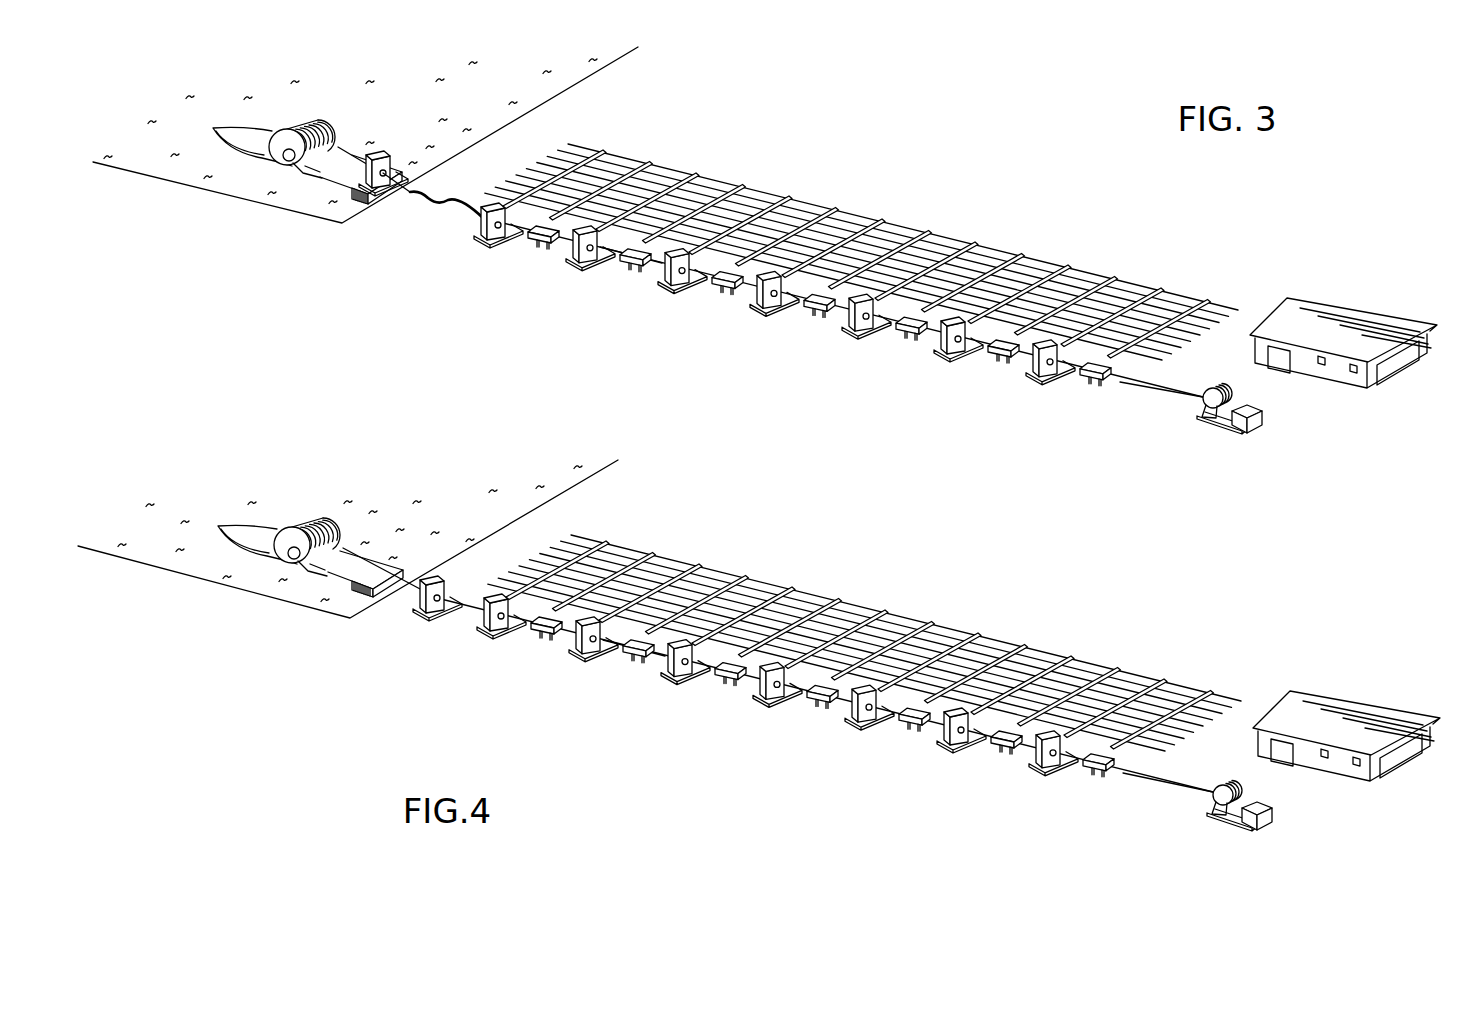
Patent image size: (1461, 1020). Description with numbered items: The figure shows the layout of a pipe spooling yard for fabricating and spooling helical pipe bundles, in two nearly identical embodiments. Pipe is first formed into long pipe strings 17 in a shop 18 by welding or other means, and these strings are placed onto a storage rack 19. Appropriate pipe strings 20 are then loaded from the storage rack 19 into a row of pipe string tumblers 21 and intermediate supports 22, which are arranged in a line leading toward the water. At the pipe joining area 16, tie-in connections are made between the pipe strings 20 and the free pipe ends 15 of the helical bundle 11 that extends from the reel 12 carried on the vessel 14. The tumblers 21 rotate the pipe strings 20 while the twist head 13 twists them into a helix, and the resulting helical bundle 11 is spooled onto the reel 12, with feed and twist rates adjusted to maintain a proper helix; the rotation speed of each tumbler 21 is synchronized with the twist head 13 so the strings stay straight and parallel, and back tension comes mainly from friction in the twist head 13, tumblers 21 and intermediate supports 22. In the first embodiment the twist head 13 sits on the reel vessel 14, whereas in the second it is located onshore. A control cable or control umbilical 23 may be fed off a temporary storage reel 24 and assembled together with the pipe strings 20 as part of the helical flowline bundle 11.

In FIG. 3, the helical bundle 11 is at (345, 150).
In FIG. 3, the reel 12 is at (278, 148).
In FIG. 4, the reel 12 is at (283, 548).
In FIG. 3, the twist head 13 is at (392, 160).
In FIG. 4, the twist head 13 is at (412, 616).
In FIG. 3, the vessel 14 is at (338, 105).
In FIG. 4, the vessel 14 is at (350, 500).
In FIG. 3, the free pipe ends 15 is at (452, 200).
In FIG. 3, the pipe joining area 16 is at (425, 207).
In FIG. 4, the pipe joining area 16 is at (467, 597).
In FIG. 3, the pipe strings 17 is at (668, 165).
In FIG. 4, the pipe strings 17 is at (761, 586).
In FIG. 3, the shop 18 is at (1352, 300).
In FIG. 4, the shop 18 is at (1360, 693).
In FIG. 3, the storage rack 19 is at (983, 232).
In FIG. 4, the storage rack 19 is at (986, 624).
In FIG. 3, the pipe strings 20 is at (657, 263).
In FIG. 4, the pipe strings 20 is at (662, 660).
In FIG. 3, the pipe string tumblers 21 is at (742, 304).
In FIG. 4, the pipe string tumblers 21 is at (750, 707).
In FIG. 3, the intermediate supports 22 is at (902, 340).
In FIG. 4, the intermediate supports 22 is at (905, 732).
In FIG. 3, the control cable or control umbilical 23 is at (1172, 396).
In FIG. 4, the control cable or control umbilical 23 is at (1175, 795).
In FIG. 3, the temporary storage reel 24 is at (1213, 425).
In FIG. 4, the temporary storage reel 24 is at (1222, 822).